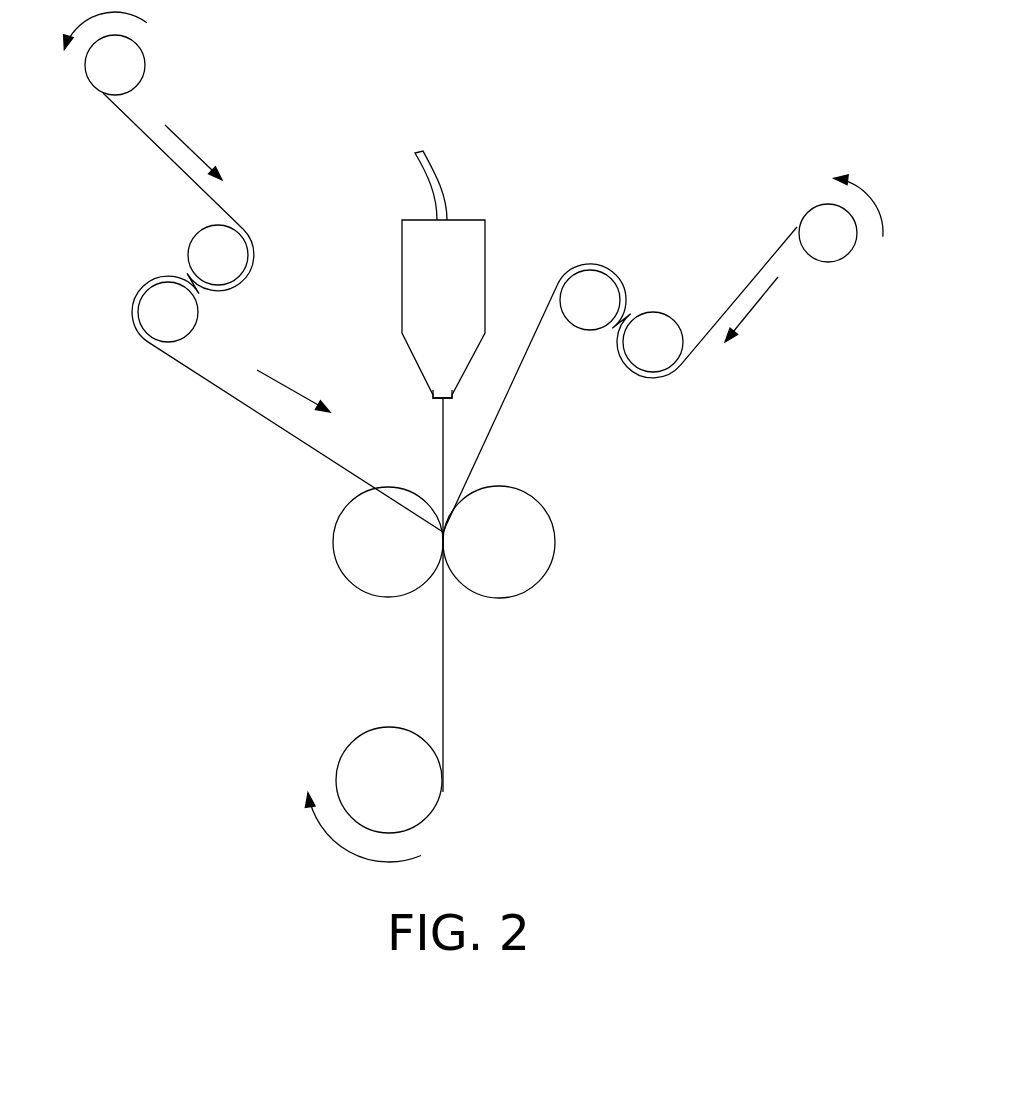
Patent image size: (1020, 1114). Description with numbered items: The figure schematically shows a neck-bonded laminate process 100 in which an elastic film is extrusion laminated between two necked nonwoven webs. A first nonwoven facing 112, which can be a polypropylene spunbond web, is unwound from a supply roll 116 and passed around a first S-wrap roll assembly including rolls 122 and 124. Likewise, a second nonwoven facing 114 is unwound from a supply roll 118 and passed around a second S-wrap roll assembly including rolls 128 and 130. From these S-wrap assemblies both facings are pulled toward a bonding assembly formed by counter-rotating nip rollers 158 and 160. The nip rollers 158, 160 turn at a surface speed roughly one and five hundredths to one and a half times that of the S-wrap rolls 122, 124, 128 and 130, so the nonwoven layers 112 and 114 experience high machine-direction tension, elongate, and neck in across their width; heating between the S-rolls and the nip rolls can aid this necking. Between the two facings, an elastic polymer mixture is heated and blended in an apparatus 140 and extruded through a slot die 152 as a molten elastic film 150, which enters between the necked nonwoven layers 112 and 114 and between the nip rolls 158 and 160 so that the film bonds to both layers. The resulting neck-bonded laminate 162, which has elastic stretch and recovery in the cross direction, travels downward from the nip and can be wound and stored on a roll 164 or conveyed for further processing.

The neck-bonded laminate process 100 is at (622, 128).
The first nonwoven facing 112 is at (230, 390).
The second nonwoven facing 114 is at (535, 327).
The supply roll 116 is at (146, 66).
The supply roll 118 is at (833, 262).
The S-wrap roll 122 is at (247, 282).
The S-wrap roll 124 is at (131, 313).
The S-wrap roll 128 is at (662, 310).
The S-wrap roll 130 is at (598, 268).
The apparatus 140 is at (397, 202).
The molten elastic film 150 is at (443, 425).
The slot die 152 is at (436, 399).
The nip roller 158 is at (357, 586).
The nip roller 160 is at (553, 562).
The neck-bonded laminate 162 is at (445, 697).
The roll 164 is at (433, 813).